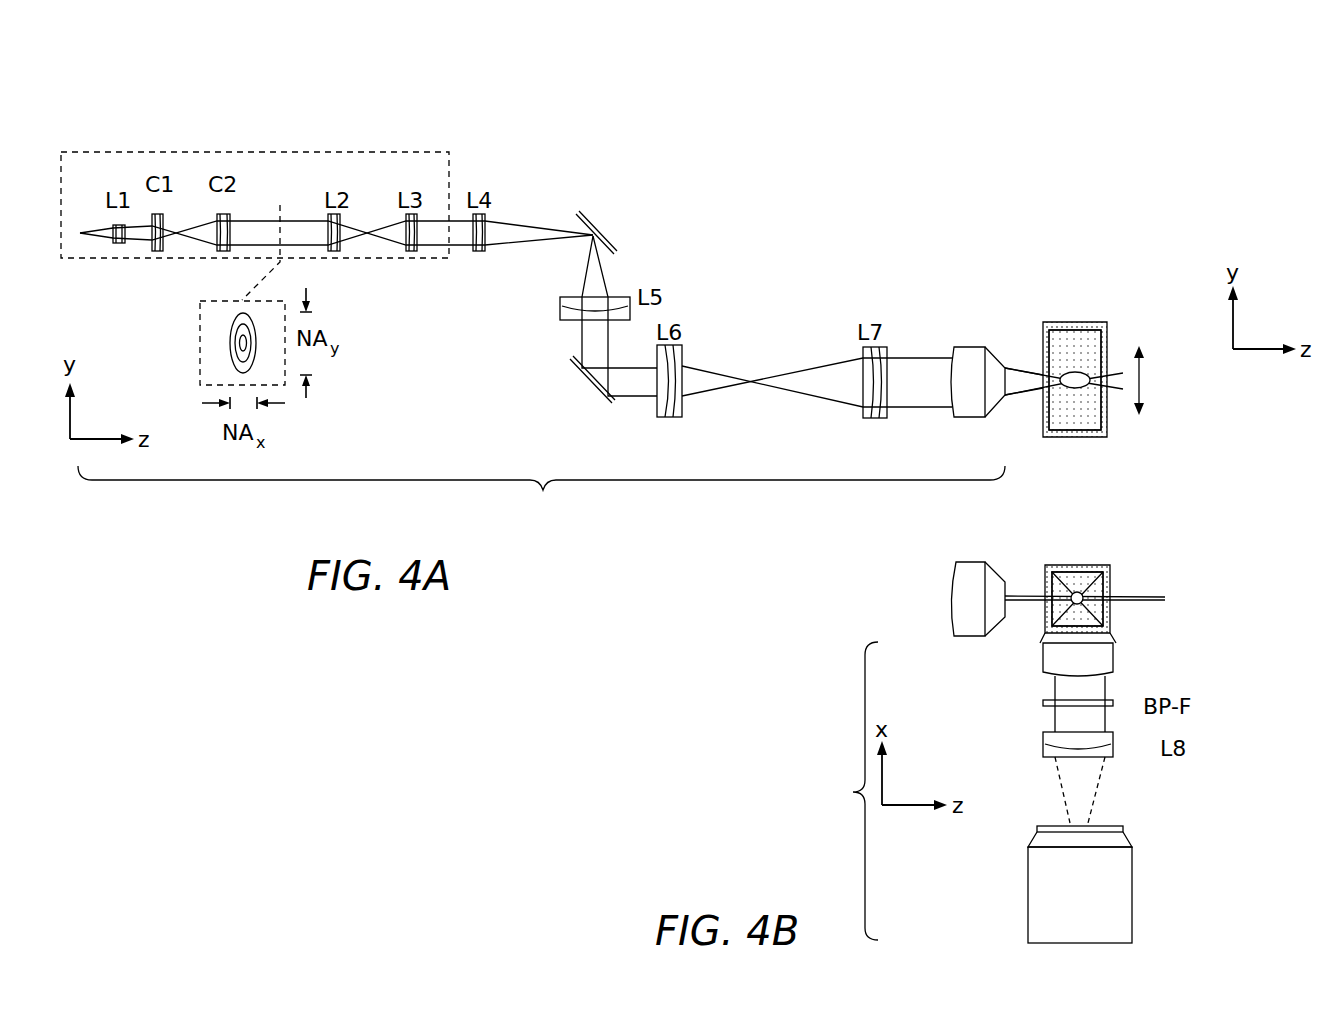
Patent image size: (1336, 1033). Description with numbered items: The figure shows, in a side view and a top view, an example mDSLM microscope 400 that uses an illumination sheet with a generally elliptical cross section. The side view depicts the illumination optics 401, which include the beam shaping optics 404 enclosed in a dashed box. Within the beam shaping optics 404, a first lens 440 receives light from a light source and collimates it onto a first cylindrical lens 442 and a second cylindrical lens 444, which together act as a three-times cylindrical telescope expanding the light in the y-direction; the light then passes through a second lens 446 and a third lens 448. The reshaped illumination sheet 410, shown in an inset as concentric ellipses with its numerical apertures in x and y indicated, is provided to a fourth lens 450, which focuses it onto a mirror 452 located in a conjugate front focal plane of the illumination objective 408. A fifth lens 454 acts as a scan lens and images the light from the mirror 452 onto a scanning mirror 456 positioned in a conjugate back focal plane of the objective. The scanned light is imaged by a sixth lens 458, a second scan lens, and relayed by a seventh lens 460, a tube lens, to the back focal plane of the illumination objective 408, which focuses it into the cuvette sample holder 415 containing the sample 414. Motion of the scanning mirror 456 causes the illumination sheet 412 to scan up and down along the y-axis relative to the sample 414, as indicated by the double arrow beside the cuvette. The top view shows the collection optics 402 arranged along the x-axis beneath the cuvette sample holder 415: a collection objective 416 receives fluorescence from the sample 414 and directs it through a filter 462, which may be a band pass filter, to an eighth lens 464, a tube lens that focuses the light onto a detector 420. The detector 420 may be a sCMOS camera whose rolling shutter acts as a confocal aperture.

In FIG. 4A, the mDSLM microscope 400 is at (110, 62).
In FIG. 4B, the mDSLM microscope 400 is at (888, 562).
In FIG. 4A, the illumination optics 401 is at (541, 495).
In FIG. 4B, the collection optics 402 is at (840, 791).
In FIG. 4A, the beam shaping optics 404 is at (135, 152).
In FIG. 4A, the illumination objective 408 is at (966, 417).
In FIG. 4B, the illumination objective 408 is at (962, 560).
In FIG. 4A, the illumination sheet 410 is at (230, 342).
In FIG. 4A, the illumination sheet 412 is at (1020, 397).
In FIG. 4A, the sample 414 is at (1082, 390).
In FIG. 4B, the sample 414 is at (1085, 592).
In FIG. 4A, the cuvette sample holder 415 is at (1043, 336).
In FIG. 4B, the cuvette sample holder 415 is at (1045, 572).
In FIG. 4B, the collection objective 416 is at (1043, 655).
In FIG. 4B, the detector 420 is at (1132, 893).
In FIG. 4A, the first lens 440 is at (117, 244).
In FIG. 4A, the first cylindrical lens 442 is at (157, 251).
In FIG. 4A, the second cylindrical lens 444 is at (224, 251).
In FIG. 4A, the second lens 446 is at (333, 251).
In FIG. 4A, the third lens 448 is at (412, 251).
In FIG. 4A, the fourth lens 450 is at (479, 251).
In FIG. 4A, the mirror 452 is at (604, 244).
In FIG. 4A, the fifth lens 454 is at (560, 306).
In FIG. 4A, the scanning mirror 456 is at (572, 363).
In FIG. 4A, the sixth lens 458 is at (670, 417).
In FIG. 4A, the seventh lens 460 is at (868, 418).
In FIG. 4B, the filter 462 is at (1043, 703).
In FIG. 4B, the eighth lens 464 is at (1043, 748).